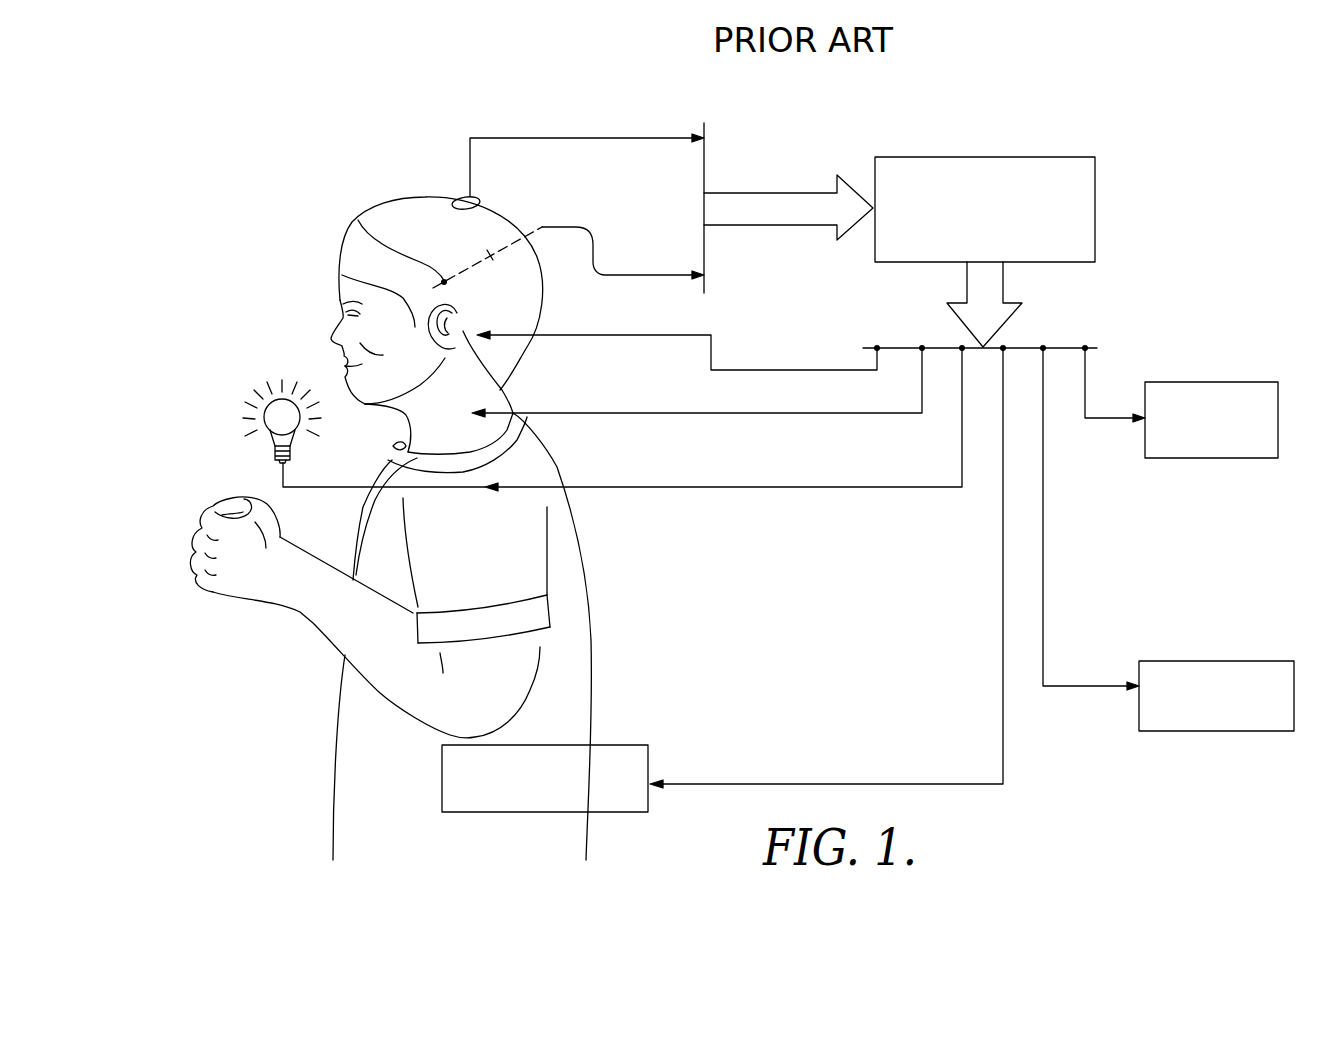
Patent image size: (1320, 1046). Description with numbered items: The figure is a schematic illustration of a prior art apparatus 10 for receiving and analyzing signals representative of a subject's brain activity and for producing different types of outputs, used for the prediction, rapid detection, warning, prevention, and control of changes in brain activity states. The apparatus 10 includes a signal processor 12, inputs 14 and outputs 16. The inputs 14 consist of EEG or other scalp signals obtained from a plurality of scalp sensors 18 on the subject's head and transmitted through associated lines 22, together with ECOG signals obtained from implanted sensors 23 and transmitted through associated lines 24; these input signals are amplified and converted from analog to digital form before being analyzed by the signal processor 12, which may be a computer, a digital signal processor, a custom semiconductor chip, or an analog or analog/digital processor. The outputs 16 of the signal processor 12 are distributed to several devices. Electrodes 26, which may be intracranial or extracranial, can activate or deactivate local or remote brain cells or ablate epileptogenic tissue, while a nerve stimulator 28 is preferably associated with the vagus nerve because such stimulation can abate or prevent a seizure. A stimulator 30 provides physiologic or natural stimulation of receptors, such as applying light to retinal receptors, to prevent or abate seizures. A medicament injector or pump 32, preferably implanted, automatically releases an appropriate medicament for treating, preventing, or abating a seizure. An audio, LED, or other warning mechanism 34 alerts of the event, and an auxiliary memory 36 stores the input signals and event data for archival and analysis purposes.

The apparatus 10 is at (1125, 148).
The signal processor 12 is at (988, 157).
The inputs 14 is at (754, 192).
The outputs 16 is at (1003, 282).
The scalp sensors 18 is at (463, 199).
The lines 22 is at (565, 138).
The implanted sensors 23 is at (360, 228).
The lines 24 is at (595, 228).
The electrodes 26 is at (497, 335).
The nerve stimulator 28 is at (492, 410).
The stimulator 30 is at (487, 495).
The medicament injector or pump 32 is at (442, 775).
The warning mechanism 34 is at (1214, 731).
The auxiliary memory 36 is at (1190, 458).